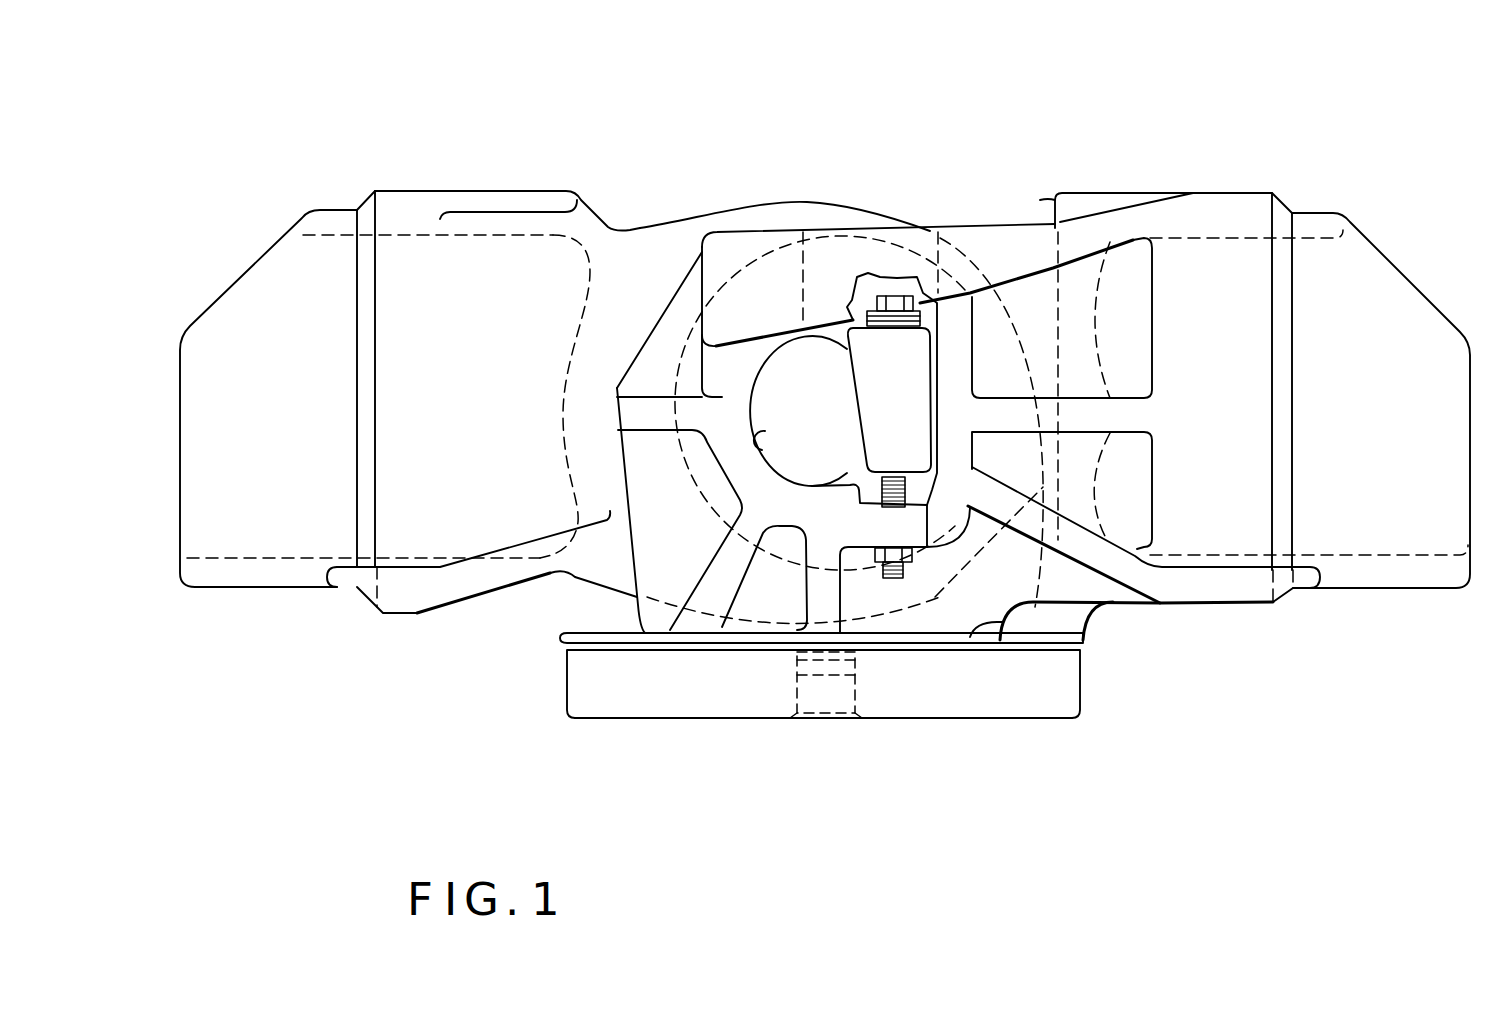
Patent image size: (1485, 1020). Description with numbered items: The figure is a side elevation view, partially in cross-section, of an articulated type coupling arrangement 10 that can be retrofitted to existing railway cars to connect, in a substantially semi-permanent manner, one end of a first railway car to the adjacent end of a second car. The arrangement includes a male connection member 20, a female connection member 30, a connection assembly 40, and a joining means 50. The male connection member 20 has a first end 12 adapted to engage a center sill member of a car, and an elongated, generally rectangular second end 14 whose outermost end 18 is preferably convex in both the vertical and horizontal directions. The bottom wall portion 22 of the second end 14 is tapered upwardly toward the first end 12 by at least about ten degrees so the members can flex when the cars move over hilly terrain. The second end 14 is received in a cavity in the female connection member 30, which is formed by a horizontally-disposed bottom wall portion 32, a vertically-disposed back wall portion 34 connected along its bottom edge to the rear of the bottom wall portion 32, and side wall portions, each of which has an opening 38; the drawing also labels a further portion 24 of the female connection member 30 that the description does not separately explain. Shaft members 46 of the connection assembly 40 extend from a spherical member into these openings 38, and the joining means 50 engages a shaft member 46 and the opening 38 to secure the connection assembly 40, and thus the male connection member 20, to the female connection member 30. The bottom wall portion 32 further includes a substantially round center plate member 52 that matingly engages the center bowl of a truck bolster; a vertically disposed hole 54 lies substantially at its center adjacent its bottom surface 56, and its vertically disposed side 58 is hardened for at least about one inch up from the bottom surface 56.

The articulated type coupling arrangement 10 is at (883, 183).
The first end 12 is at (340, 213).
The second end 14 is at (678, 233).
The outermost end 18 is at (961, 273).
The male connection member 20 is at (583, 177).
The bottom wall portion 22 is at (585, 587).
The right end flap 24 is at (1315, 220).
The female connection member 30 is at (1137, 175).
The bottom wall portion 32 is at (1003, 622).
The back wall portion 34 is at (1060, 196).
The opening 38 is at (763, 450).
The connection assembly 40 is at (695, 473).
The shaft members 46 is at (804, 406).
The joining means 50 is at (900, 293).
The center plate member 52 is at (587, 678).
The hole 54 is at (820, 710).
The bottom surface 56 is at (922, 720).
The side 58 is at (1083, 695).